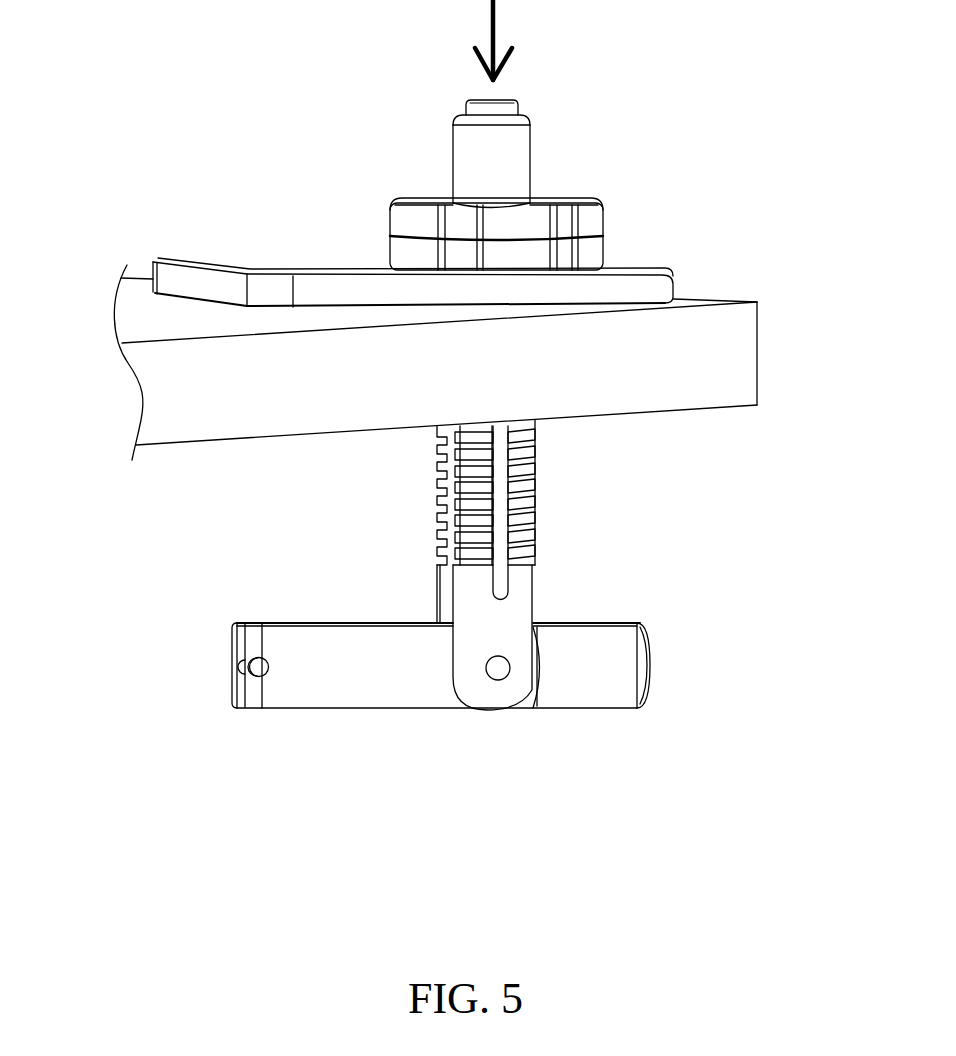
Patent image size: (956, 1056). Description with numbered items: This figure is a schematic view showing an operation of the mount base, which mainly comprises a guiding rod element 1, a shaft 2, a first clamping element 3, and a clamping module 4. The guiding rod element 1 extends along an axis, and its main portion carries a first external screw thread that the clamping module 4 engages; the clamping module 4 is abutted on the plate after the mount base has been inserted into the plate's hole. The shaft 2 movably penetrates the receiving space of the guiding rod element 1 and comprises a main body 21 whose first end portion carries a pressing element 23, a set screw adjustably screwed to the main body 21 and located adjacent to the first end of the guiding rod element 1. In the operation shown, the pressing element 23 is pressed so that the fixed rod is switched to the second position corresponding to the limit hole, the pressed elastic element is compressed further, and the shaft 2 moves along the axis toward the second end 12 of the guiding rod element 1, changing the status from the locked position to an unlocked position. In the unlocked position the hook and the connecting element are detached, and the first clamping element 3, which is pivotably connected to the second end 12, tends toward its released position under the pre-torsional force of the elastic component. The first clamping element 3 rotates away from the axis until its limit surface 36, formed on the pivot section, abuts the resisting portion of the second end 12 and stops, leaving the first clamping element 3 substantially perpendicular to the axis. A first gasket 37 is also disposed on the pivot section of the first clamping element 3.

The guiding rod element 1 is at (525, 497).
The shaft 2 is at (521, 117).
The first clamping element 3 is at (385, 690).
The clamping module 4 is at (598, 219).
The second end 12 is at (485, 693).
The main body 21 is at (537, 650).
The pressing element 23 is at (520, 102).
The limit surface 36 is at (522, 703).
The first gasket 37 is at (325, 622).